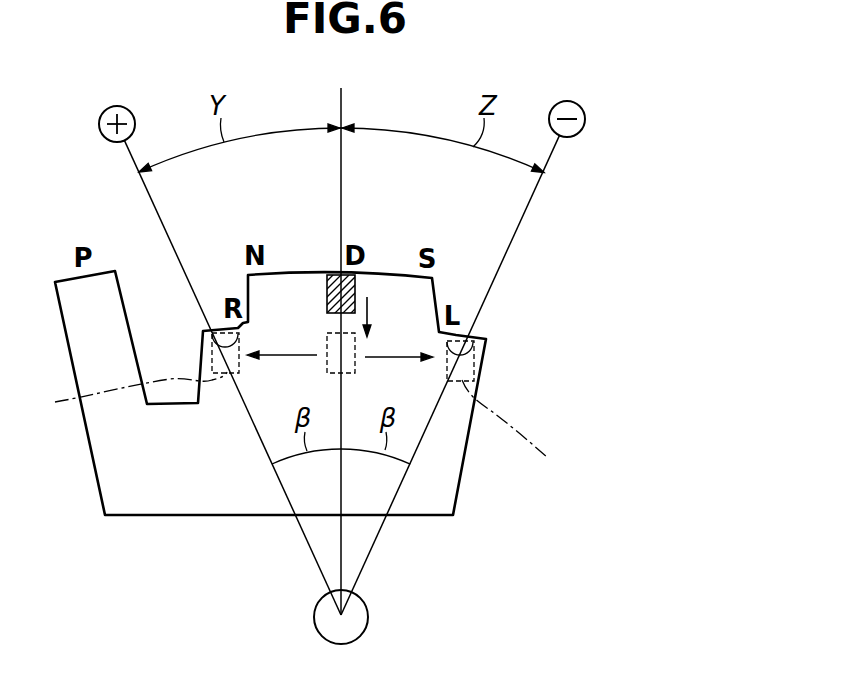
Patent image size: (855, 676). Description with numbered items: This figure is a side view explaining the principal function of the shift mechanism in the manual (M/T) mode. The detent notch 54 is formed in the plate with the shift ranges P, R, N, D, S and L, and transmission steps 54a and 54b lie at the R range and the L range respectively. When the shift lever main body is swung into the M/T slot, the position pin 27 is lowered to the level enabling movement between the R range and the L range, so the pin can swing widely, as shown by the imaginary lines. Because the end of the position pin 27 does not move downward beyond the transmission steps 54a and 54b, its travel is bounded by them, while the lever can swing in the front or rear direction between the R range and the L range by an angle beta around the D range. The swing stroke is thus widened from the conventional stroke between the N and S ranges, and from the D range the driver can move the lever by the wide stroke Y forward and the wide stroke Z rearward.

The position pin 27 is at (333, 276).
The detent notch 54 is at (208, 516).
The transmission step of the R range 54a is at (212, 341).
The transmission step of the L range 54b is at (470, 356).